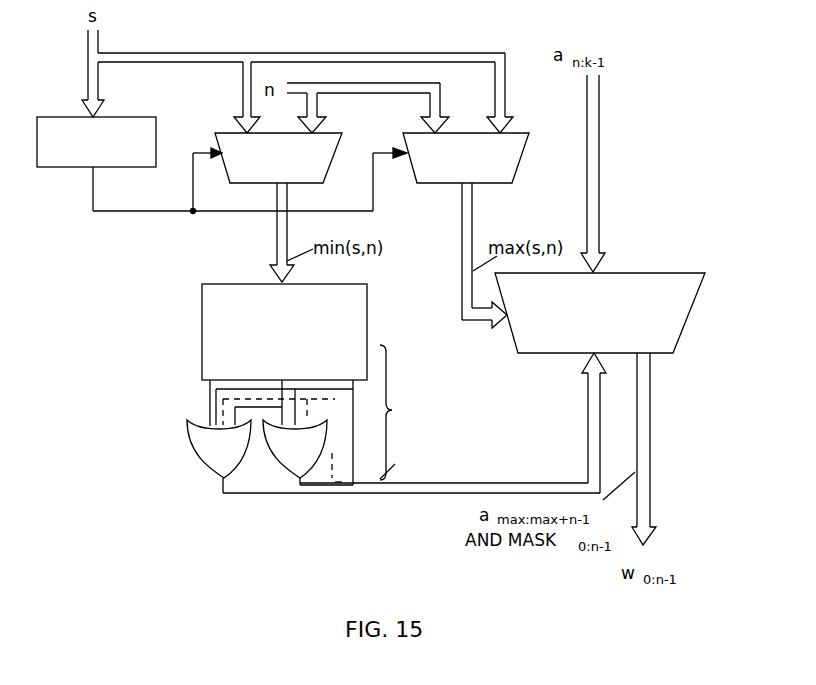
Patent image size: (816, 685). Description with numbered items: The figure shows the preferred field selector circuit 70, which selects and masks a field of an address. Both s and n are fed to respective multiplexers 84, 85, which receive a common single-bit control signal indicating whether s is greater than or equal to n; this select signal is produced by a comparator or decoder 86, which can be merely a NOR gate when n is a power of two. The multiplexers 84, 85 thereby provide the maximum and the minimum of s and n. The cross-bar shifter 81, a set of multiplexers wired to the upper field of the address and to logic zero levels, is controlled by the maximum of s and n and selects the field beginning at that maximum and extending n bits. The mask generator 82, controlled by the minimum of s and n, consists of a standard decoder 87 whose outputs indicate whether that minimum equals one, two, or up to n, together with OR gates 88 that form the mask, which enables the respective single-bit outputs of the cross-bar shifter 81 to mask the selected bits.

The field selector circuit 70 is at (700, 74).
The cross-bar shifter 81 is at (645, 271).
The mask generator 82 is at (433, 446).
The multiplexer 84 is at (488, 185).
The multiplexer 85 is at (307, 185).
The comparator or decoder 86 is at (123, 167).
The decoder 87 is at (245, 283).
The OR gates 88 is at (198, 458).